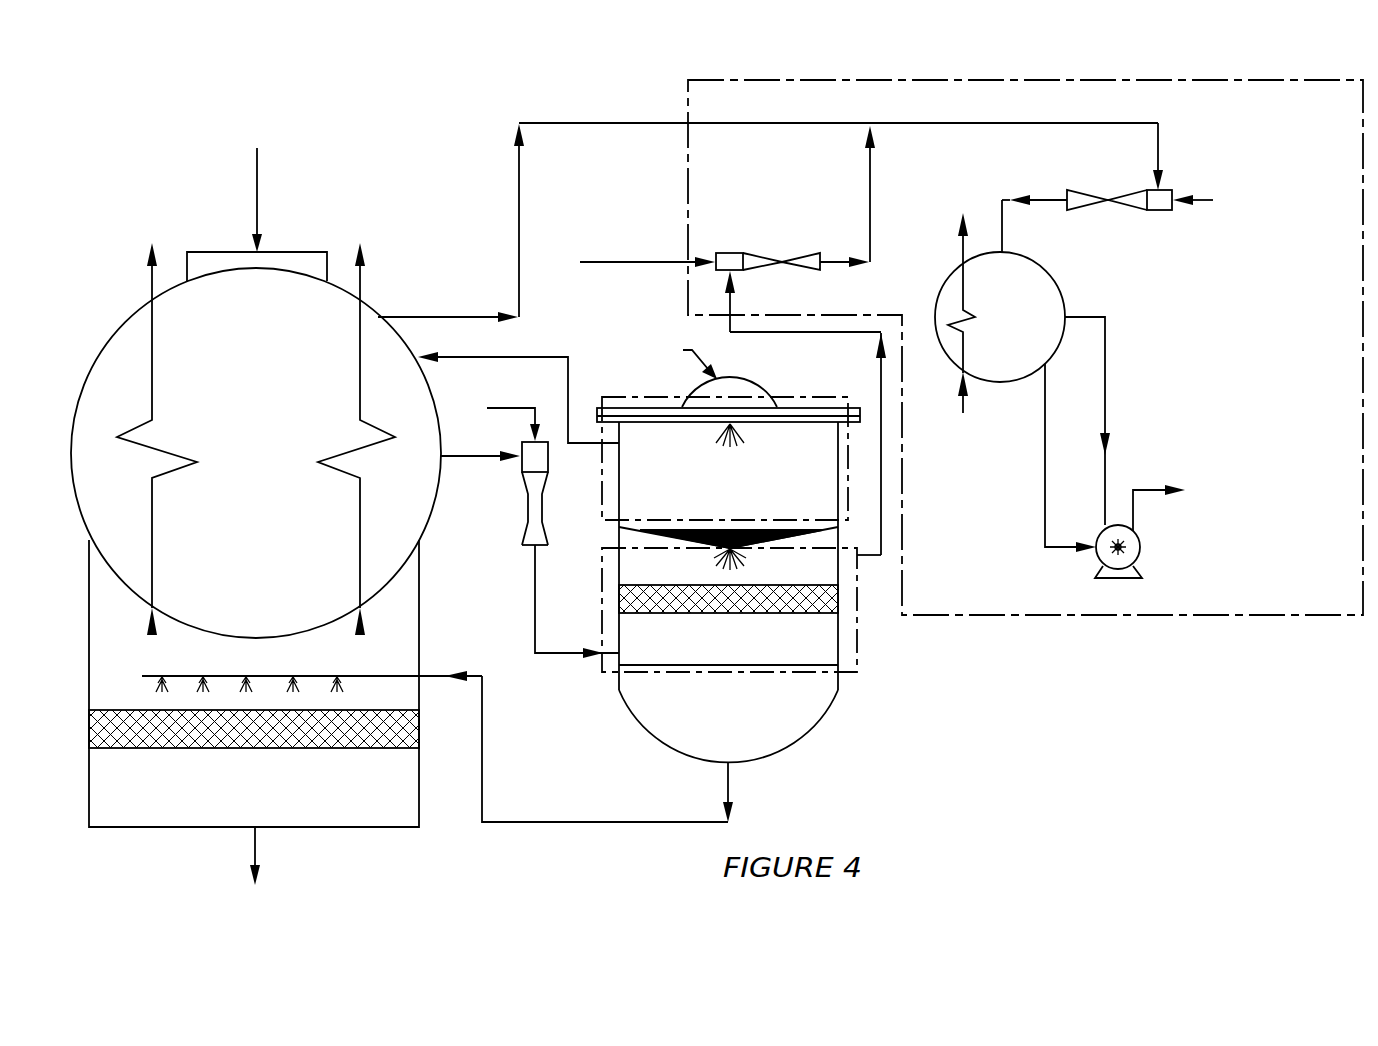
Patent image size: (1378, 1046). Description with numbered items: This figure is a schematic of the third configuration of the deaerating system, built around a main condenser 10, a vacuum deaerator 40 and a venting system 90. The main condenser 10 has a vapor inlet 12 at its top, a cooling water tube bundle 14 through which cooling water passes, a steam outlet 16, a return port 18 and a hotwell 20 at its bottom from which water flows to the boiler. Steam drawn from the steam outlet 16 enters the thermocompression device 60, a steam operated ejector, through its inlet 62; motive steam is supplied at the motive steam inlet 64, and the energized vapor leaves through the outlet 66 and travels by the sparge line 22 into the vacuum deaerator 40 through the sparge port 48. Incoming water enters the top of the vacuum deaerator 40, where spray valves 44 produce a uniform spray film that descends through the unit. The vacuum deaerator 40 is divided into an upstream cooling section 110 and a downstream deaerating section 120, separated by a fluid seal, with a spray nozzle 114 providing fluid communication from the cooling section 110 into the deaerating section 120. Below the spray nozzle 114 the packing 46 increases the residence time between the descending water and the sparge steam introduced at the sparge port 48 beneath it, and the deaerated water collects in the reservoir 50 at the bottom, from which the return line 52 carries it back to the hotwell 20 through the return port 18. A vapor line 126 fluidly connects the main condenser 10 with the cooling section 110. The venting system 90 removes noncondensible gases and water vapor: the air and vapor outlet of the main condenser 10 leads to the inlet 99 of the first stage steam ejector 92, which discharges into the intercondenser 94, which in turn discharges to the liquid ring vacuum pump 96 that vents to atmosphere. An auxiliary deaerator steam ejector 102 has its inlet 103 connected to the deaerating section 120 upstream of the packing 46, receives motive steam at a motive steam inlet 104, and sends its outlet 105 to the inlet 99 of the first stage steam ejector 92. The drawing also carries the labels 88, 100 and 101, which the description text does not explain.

The main condenser 10 is at (247, 453).
The vapor inlet 12 is at (257, 195).
The cooling water tube bundle 14 is at (215, 437).
The steam outlet 16 is at (480, 447).
The return port 18 is at (451, 660).
The hotwell 20 is at (144, 783).
The sparge line 22 is at (542, 601).
The vacuum deaerator 40 is at (762, 527).
The spray valves 44 is at (764, 441).
The packing 46 is at (695, 604).
The sparge port 48 is at (695, 692).
The reservoir 50 is at (749, 736).
The return line 52 is at (607, 774).
The thermocompression device 60 is at (506, 509).
The inlet 62 is at (506, 474).
The motive steam inlet 64 is at (526, 430).
The outlet 66 is at (510, 563).
The air removal system boundary 88 is at (1025, 323).
The venting system 90 is at (768, 176).
The first stage steam ejector 92 is at (1107, 219).
The intercondenser 94 is at (1023, 320).
The liquid ring vacuum pump 96 is at (1177, 452).
The inlet of the first stage steam ejector 99 is at (1126, 156).
The second stage ejector 100 is at (1245, 182).
The ejector discharge to intercondenser 101 is at (1035, 204).
The auxiliary deaerator steam ejector 102 is at (768, 244).
The inlet 103 is at (805, 413).
The motive steam inlet 104 is at (635, 227).
The outlet 105 is at (850, 213).
The cooling section 110 is at (700, 458).
The spray nozzle 114 is at (728, 555).
The deaerating section 120 is at (769, 610).
The vapor line 126 is at (518, 385).